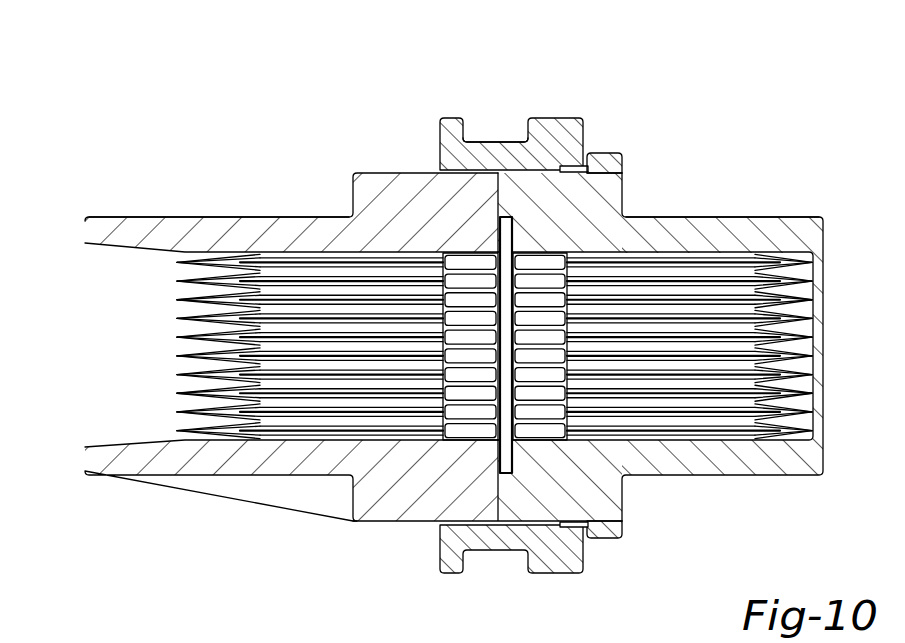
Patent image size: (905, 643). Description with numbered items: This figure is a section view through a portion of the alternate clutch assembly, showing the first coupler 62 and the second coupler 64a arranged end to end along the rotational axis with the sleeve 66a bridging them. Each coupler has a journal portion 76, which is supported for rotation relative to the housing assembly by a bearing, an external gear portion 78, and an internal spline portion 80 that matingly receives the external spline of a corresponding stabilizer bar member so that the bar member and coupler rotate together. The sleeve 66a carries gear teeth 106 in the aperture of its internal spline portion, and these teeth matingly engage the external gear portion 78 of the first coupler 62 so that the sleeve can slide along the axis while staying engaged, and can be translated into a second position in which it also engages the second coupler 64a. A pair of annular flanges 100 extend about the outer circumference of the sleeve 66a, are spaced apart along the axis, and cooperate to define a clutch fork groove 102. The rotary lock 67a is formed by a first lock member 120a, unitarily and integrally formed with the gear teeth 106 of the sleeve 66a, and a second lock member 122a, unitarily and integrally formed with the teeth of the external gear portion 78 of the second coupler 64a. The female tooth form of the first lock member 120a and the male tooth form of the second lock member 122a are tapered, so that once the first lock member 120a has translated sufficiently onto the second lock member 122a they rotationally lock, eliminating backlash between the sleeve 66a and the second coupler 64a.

The first coupler 62 is at (248, 460).
The second coupler 64a is at (750, 478).
The journal portion 76 is at (262, 224).
The external gear portion 78 is at (385, 180).
The internal spline portion 80 is at (215, 340).
The annular flanges 100 is at (452, 118).
The clutch fork groove 102 is at (500, 142).
The gear teeth 106 is at (502, 540).
The sleeve 66a is at (557, 550).
The first lock member 120a is at (582, 160).
The second lock member 122a is at (646, 345).
The rotary lock 67a is at (667, 320).